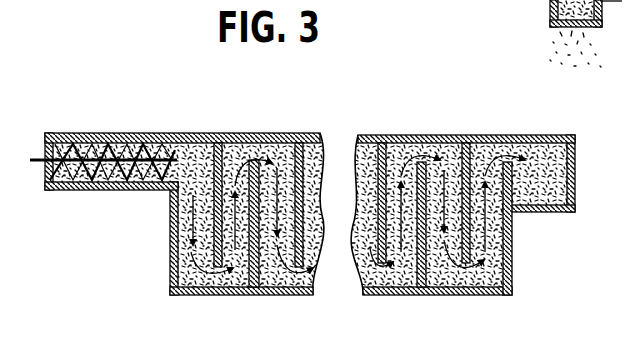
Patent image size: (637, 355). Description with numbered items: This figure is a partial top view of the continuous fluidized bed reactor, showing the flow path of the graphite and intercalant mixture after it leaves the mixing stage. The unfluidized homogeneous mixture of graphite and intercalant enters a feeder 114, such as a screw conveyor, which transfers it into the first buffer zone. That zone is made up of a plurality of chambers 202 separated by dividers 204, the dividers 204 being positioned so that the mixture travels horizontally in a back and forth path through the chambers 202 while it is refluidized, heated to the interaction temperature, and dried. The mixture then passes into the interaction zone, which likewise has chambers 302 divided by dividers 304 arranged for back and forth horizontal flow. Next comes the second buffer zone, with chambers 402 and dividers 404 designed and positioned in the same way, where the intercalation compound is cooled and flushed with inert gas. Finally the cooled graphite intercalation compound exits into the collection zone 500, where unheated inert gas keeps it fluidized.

The feeder 114 is at (65, 134).
The chambers 202 is at (235, 128).
The dividers 204 is at (182, 135).
The chambers 302 is at (272, 295).
The dividers 304 is at (278, 130).
The chambers 402 is at (475, 135).
The dividers 404 is at (492, 241).
The collection zone 500 is at (549, 135).